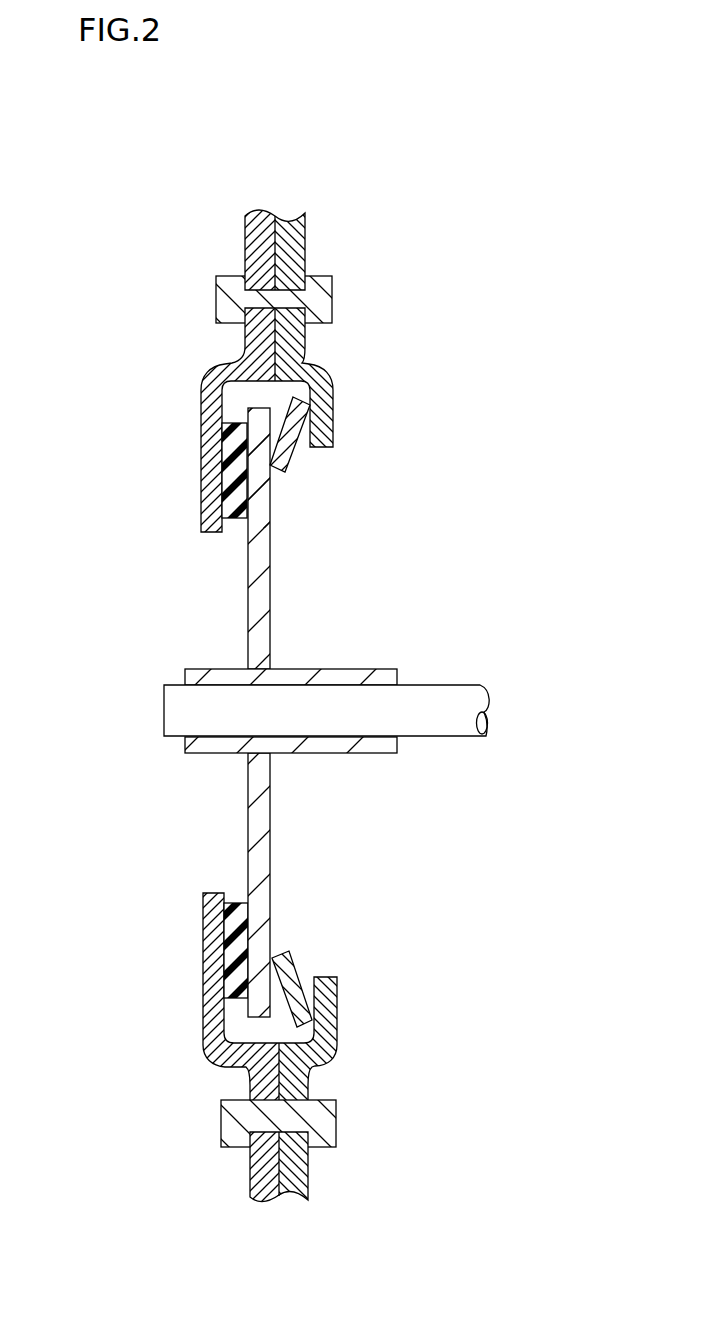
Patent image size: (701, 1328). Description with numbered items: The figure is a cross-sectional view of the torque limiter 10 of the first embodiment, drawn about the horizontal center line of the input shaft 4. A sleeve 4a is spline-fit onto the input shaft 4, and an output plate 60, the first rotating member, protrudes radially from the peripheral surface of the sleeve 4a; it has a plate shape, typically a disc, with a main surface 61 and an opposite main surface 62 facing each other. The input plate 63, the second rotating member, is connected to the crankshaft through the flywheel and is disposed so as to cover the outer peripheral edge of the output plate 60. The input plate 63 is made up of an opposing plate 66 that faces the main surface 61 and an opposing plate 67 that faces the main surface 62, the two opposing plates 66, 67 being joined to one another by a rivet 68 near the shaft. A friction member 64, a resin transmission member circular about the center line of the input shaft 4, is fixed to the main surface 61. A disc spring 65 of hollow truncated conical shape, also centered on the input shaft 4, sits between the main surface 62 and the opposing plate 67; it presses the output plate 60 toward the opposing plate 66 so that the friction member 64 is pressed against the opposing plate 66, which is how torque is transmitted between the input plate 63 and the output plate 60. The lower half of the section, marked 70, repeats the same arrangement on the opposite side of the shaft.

The torque limiter 10 is at (320, 628).
The input plate 63 is at (269, 346).
The rivet 68 is at (325, 301).
The opposing plate 66 is at (208, 417).
The opposing plate 67 is at (321, 413).
The friction member 64 is at (236, 457).
The main surface 61 is at (199, 470).
The disc spring 65 is at (287, 453).
The main surface 62 is at (271, 498).
The output plate 60 is at (286, 712).
The sleeve 4a is at (352, 676).
The input shaft 4 is at (446, 697).
The second support member 70 is at (241, 950).